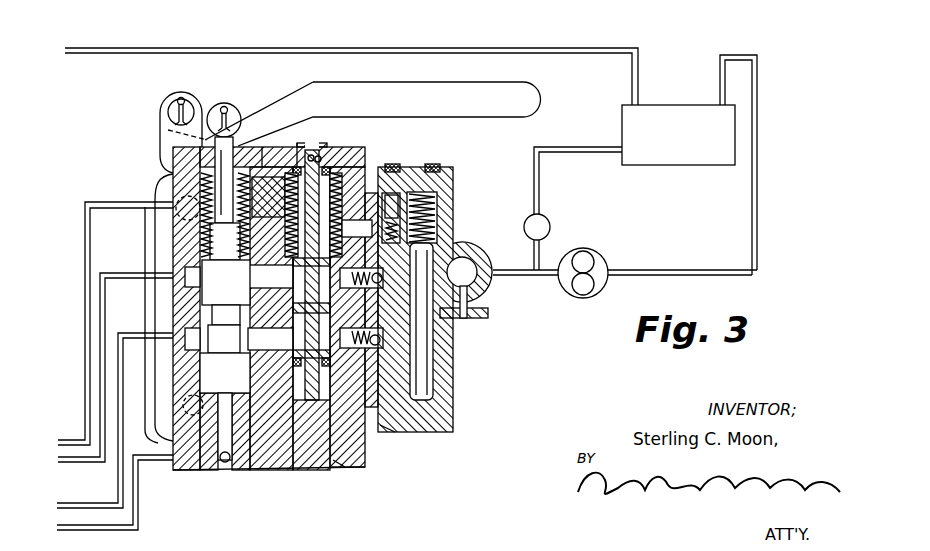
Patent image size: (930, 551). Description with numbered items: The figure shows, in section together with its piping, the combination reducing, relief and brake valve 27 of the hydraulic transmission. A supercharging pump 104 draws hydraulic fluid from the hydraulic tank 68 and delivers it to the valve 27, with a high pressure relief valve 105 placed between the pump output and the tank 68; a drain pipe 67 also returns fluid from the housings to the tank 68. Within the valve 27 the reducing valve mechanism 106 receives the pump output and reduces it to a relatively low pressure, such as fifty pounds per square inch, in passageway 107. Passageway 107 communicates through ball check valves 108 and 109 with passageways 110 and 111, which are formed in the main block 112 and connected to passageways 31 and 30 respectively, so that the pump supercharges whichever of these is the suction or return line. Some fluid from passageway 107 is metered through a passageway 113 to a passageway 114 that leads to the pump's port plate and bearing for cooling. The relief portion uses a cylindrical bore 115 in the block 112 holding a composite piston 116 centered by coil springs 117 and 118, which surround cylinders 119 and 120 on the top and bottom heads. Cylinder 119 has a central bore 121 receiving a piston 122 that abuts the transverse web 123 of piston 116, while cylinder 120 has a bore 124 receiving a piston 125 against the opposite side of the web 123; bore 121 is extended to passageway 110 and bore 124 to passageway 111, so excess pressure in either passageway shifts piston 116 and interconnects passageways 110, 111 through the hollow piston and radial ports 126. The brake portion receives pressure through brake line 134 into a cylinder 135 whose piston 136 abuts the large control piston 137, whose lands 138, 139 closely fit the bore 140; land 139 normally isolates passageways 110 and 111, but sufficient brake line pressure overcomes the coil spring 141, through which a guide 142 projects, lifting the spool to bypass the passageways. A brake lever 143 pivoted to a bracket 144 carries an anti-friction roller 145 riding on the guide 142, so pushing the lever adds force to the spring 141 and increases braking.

The combination reducing, relief and brake valve 27 is at (460, 165).
The passageway 30 is at (140, 337).
The passageway 31 is at (133, 275).
The drain pipe 67 is at (590, 48).
The hydraulic tank 68 is at (692, 153).
The supercharging pump 104 is at (606, 240).
The high pressure relief valve 105 is at (547, 218).
The reducing valve mechanism 106 is at (462, 248).
The passageway 107 is at (447, 303).
The ball check valve 108 is at (453, 210).
The ball check valve 109 is at (410, 428).
The passageway 110 is at (270, 276).
The passageway 111 is at (270, 339).
The main block 112 is at (180, 228).
The passageway 113 is at (265, 148).
The passageway 114 is at (85, 210).
The cylindrical bore 115 is at (387, 433).
The composite piston 116 is at (250, 358).
The coil spring 117 is at (334, 165).
The coil spring 118 is at (365, 470).
The cylinder 119 is at (330, 160).
The cylinder 120 is at (300, 473).
The central bore 121 is at (316, 155).
The piston 122 is at (297, 143).
The transverse web 123 is at (250, 293).
The bore 124 is at (362, 442).
The piston 125 is at (338, 475).
The radial ports 126 is at (448, 268).
The brake line 134 is at (163, 455).
The cylinder 135 is at (235, 473).
The piston 136 is at (187, 405).
The control piston 137 is at (224, 314).
The land 138 is at (225, 373).
The land 139 is at (224, 250).
The cylinder or bore 140 is at (172, 305).
The coil spring 141 is at (173, 174).
The guide 142 is at (248, 145).
The brake lever 143 is at (373, 114).
The bracket 144 is at (168, 138).
The anti-friction roller 145 is at (215, 112).